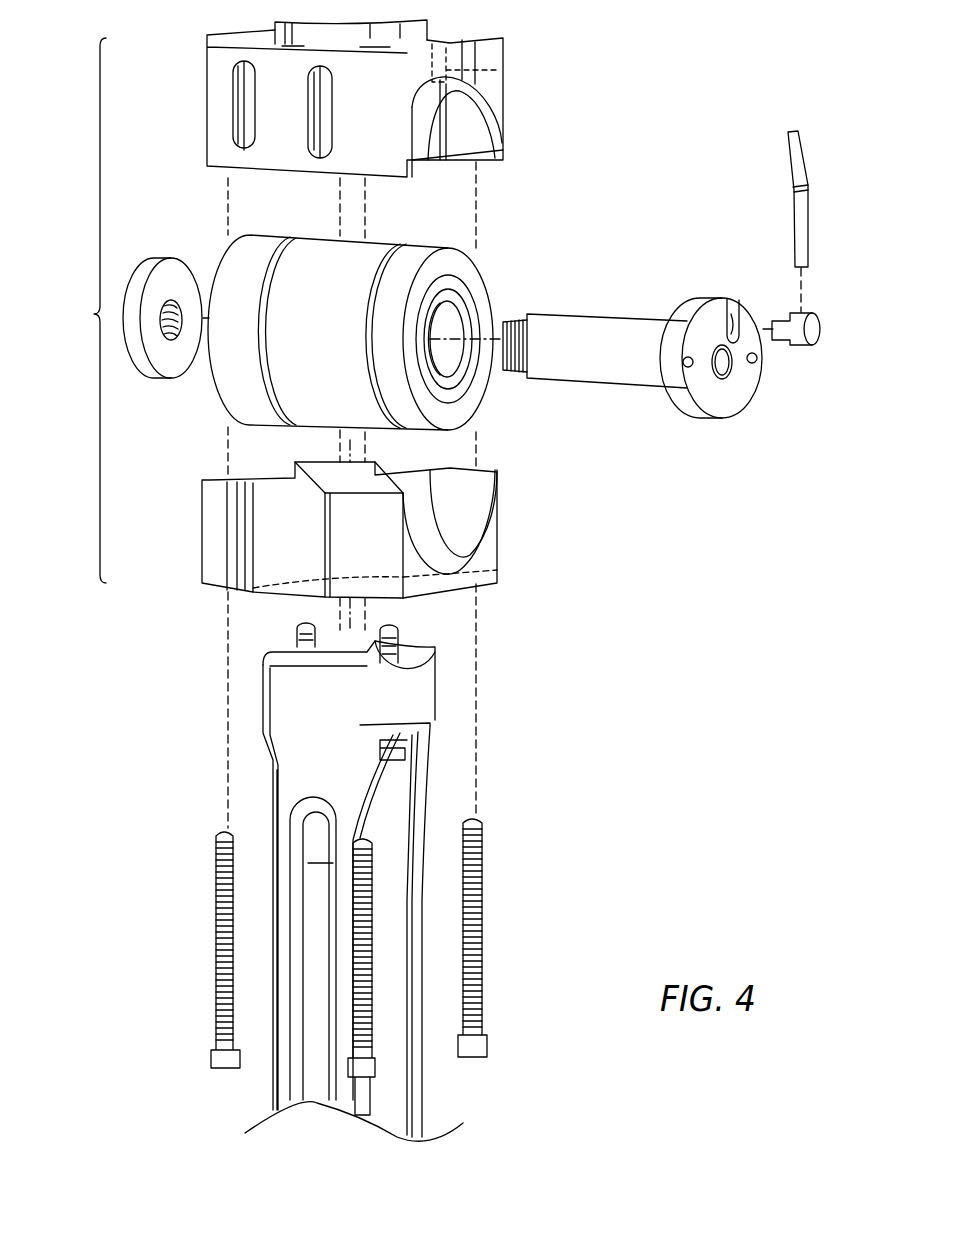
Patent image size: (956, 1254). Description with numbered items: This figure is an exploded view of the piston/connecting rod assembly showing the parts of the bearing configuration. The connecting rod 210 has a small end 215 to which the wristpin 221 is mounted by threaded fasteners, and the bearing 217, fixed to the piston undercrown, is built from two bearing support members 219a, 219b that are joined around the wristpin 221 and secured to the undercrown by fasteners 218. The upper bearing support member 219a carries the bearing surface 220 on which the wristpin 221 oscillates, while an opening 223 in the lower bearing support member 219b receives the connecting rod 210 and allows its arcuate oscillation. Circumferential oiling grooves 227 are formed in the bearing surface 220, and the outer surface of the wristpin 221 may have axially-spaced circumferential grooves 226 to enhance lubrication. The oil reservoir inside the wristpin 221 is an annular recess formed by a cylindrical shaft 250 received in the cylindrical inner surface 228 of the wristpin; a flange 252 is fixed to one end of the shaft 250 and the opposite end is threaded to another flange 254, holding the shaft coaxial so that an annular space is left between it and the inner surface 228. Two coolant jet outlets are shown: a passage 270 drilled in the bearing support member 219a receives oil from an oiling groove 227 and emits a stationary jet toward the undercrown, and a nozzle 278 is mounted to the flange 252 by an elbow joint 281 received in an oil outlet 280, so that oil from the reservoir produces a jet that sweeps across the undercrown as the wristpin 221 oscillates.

The connecting rod 210 is at (456, 1104).
The small end 215 is at (420, 692).
The bearing 217 is at (82, 310).
The fasteners 218 is at (482, 905).
The bearing support member 219a is at (505, 102).
The bearing support member 219b is at (497, 520).
The bearing surface 220 is at (430, 130).
The wristpin 221 is at (470, 272).
The opening 223 is at (412, 592).
The circumferential grooves 226 is at (258, 392).
The circumferential oiling grooves 227 is at (452, 130).
The cylindrical inner surface 228 is at (450, 330).
The cylindrical shaft 250 is at (622, 340).
The flange 252 is at (740, 400).
The flange 254 is at (168, 258).
The passage 270 is at (500, 70).
The nozzle 278 is at (793, 202).
The oil outlet 280 is at (736, 322).
The elbow joint 281 is at (793, 345).